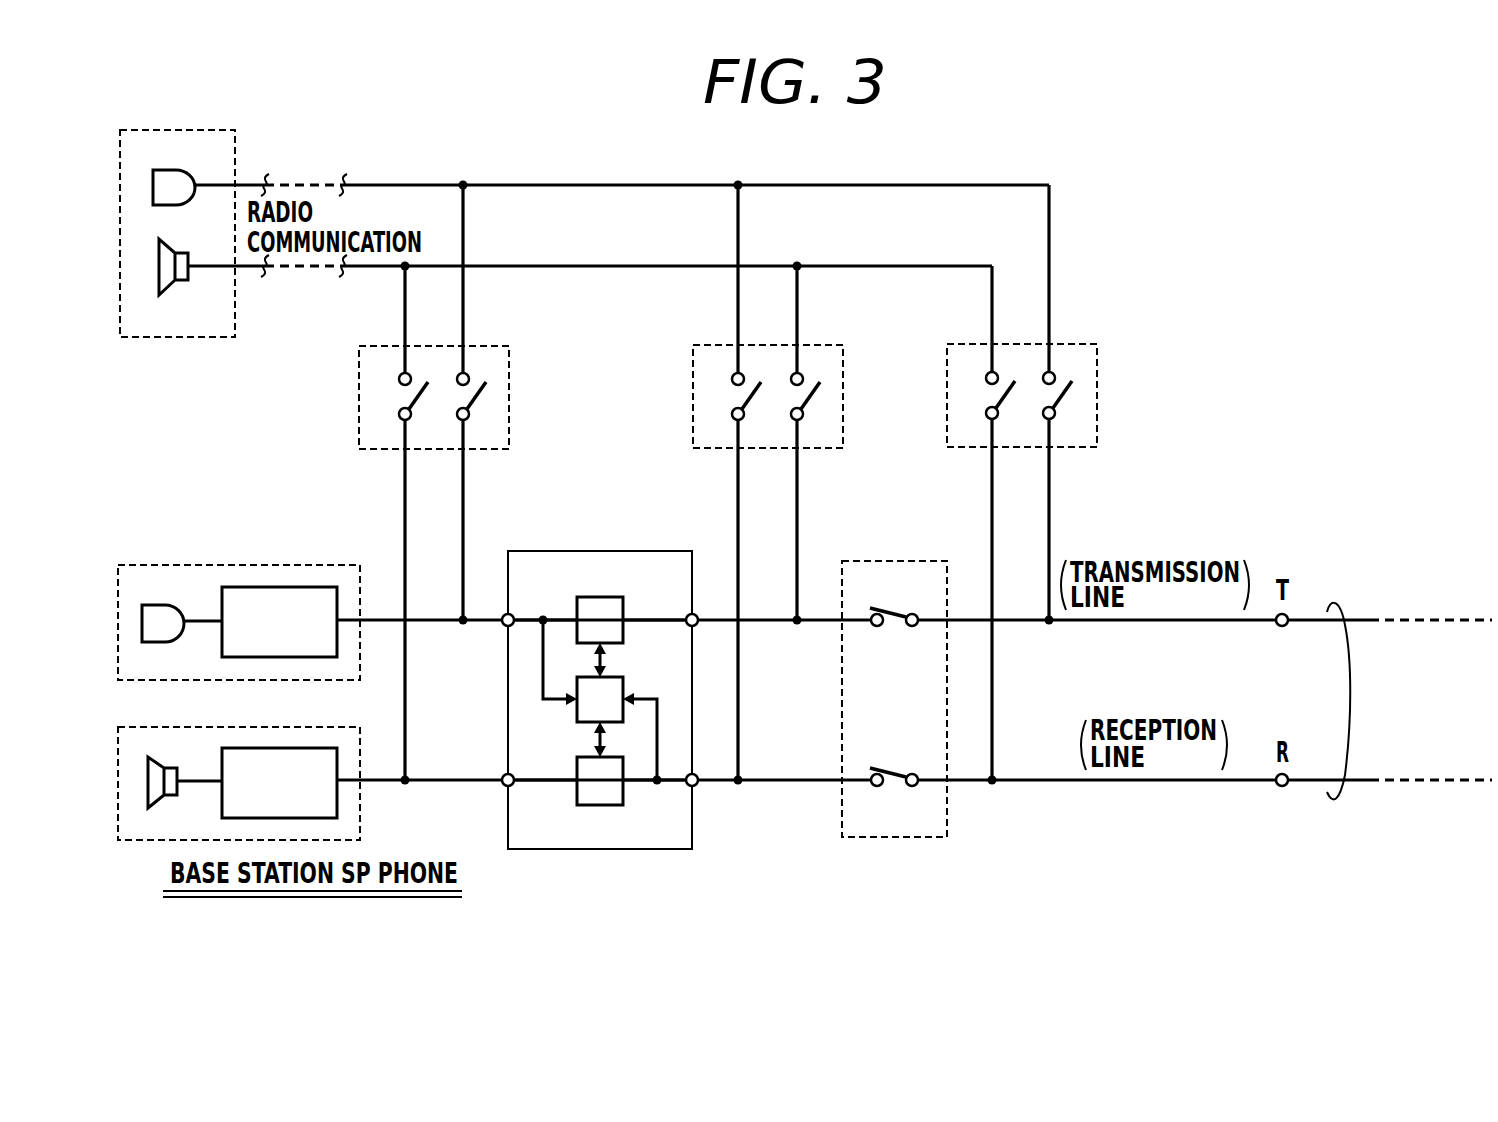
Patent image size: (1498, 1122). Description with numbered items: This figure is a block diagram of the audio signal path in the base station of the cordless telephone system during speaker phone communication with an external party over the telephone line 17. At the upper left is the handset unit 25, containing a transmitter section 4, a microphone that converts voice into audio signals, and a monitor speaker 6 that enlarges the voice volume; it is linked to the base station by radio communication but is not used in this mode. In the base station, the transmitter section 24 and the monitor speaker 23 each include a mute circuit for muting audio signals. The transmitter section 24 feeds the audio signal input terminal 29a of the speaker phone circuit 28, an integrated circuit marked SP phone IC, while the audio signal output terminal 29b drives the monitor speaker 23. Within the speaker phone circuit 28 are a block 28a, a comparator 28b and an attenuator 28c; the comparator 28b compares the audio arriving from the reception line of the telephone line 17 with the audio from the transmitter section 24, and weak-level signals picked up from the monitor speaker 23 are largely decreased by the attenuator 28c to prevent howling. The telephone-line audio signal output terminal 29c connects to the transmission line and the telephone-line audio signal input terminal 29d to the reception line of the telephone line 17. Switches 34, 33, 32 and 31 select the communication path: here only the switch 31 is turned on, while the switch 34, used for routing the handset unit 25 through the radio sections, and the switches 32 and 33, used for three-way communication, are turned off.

The handset unit 25 is at (217, 128).
The transmitter section 4 is at (188, 172).
The monitor speaker 6 is at (186, 251).
The switch 34 is at (494, 347).
The switch 33 is at (827, 347).
The switch 32 is at (1080, 345).
The switch 31 is at (922, 561).
The transmitter section 24 is at (318, 565).
The monitor speaker 23 is at (318, 725).
The speaker phone circuit 28 is at (555, 551).
The transmission block of speakerphone IC 28a is at (618, 598).
The comparator 28b is at (618, 677).
The attenuator 28c is at (590, 758).
The audio signal input terminal 29a is at (494, 616).
The audio signal output terminal 29b is at (494, 774).
The telephone-line audio signal output terminal 29c is at (698, 612).
The telephone-line audio signal input terminal 29d is at (698, 774).
The telephone line 17 is at (1342, 600).